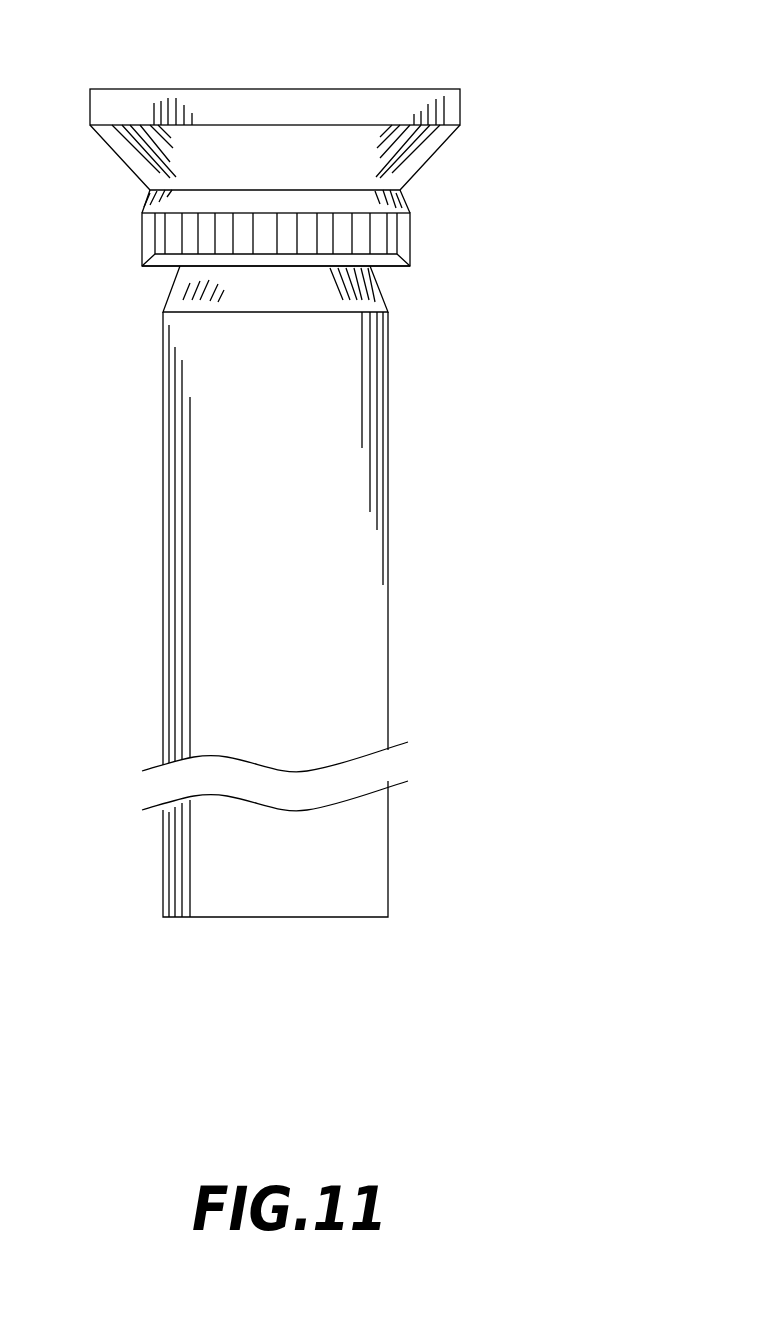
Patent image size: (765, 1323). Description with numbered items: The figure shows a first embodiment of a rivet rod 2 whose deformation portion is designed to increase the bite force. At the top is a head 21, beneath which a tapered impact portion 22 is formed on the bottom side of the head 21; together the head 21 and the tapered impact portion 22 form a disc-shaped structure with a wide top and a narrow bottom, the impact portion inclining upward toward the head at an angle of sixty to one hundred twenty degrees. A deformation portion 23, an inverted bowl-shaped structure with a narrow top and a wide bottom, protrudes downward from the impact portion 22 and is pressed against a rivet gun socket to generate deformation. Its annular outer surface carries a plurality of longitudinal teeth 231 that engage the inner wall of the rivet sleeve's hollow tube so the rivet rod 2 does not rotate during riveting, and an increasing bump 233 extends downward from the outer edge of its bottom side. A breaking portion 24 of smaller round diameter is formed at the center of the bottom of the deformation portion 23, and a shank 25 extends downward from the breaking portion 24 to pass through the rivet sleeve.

The rivet rod 2 is at (138, 492).
The head 21 is at (272, 89).
The tapered impact portion 22 is at (432, 158).
The deformation portion 23 is at (403, 248).
The longitudinal teeth 231 is at (397, 230).
The increasing bump 233 is at (413, 266).
The breaking portion 24 is at (370, 302).
The shank 25 is at (338, 651).